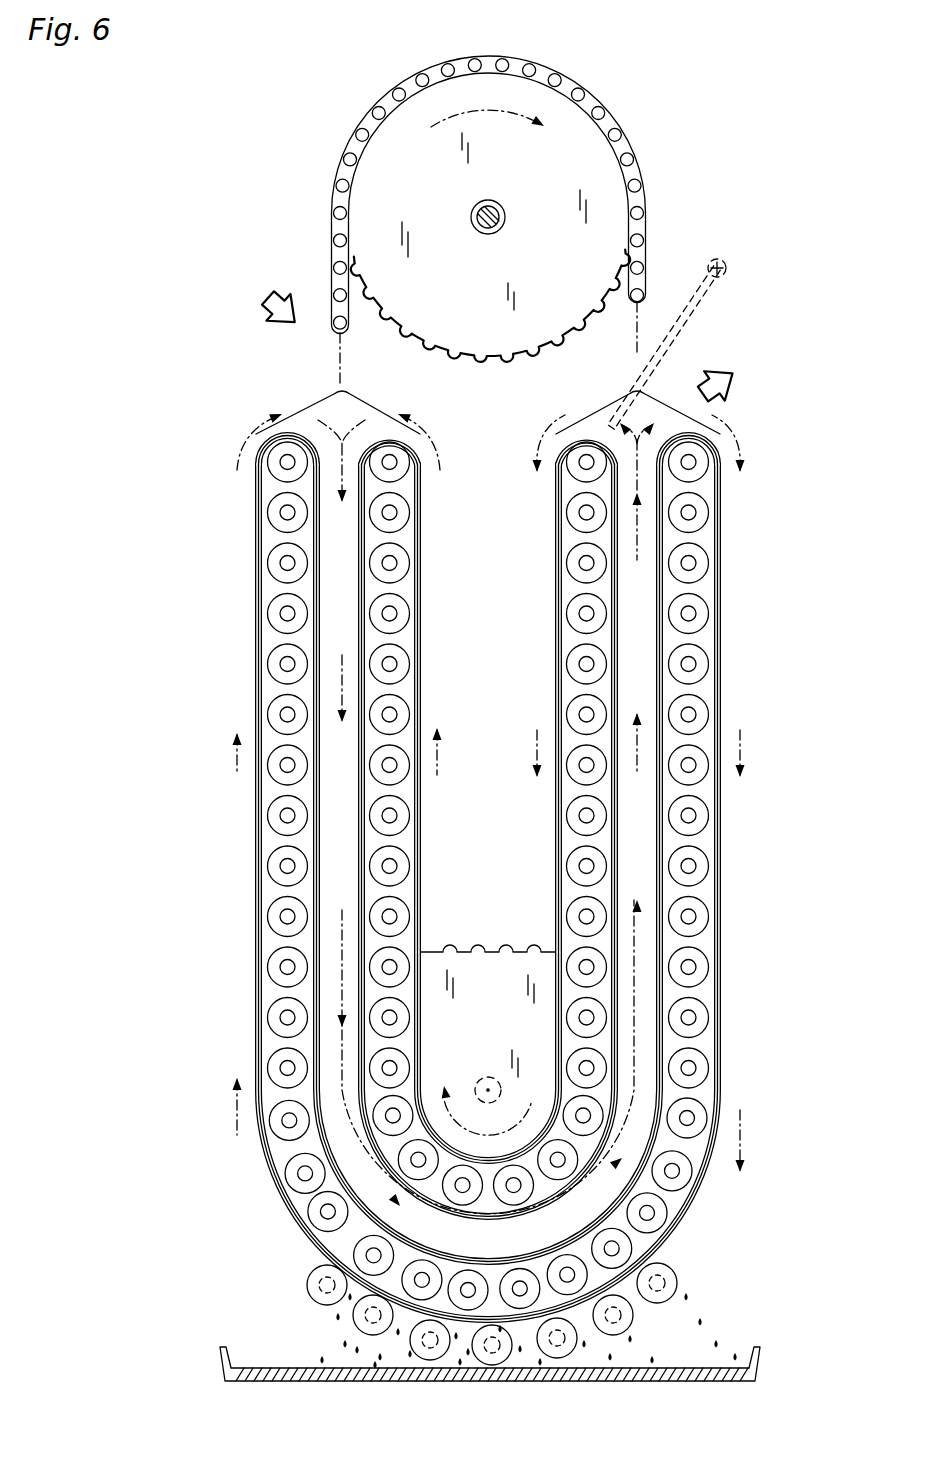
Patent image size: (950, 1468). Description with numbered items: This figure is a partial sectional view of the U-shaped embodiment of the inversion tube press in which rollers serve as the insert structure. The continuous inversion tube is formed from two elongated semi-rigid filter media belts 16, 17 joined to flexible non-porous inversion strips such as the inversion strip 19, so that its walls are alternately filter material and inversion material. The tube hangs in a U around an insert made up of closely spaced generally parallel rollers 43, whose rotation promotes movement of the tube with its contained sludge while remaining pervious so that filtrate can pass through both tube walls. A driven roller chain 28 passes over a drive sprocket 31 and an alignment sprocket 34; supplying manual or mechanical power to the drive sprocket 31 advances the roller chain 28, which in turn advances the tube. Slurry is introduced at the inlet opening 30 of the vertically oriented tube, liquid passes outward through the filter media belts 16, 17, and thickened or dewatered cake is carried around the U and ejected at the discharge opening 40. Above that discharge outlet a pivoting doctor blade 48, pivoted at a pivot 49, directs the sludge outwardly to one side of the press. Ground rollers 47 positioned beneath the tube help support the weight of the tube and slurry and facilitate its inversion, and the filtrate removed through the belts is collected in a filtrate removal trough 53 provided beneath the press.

The filter media belt 16 is at (553, 682).
The filter media belt 17 is at (257, 843).
The inversion strip 19 is at (330, 935).
The roller chain 28 is at (645, 210).
The inlet opening 30 is at (293, 396).
The drive sprocket 31 is at (490, 350).
The alignment sprocket 34 is at (488, 970).
The discharge opening 40 is at (745, 408).
The rollers 43 is at (278, 514).
The ground rollers 47 is at (370, 1322).
The doctor blade 48 is at (680, 326).
The pivot 49 is at (722, 260).
The filtrate removal trough 53 is at (725, 1368).